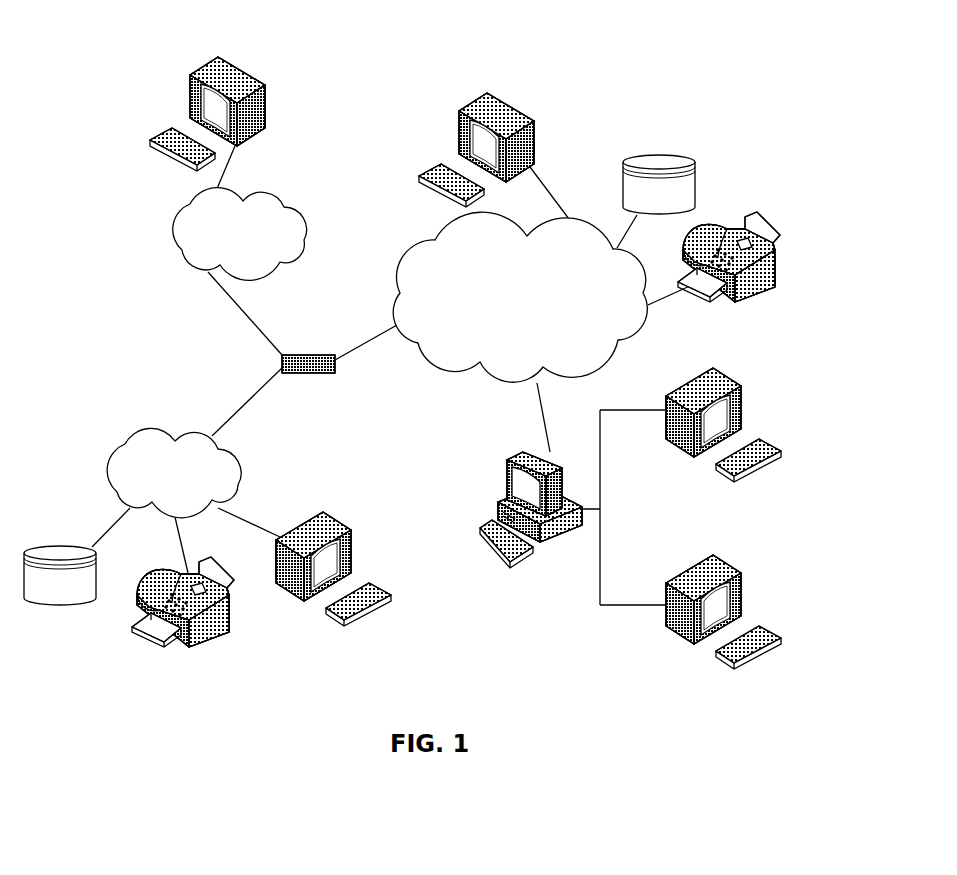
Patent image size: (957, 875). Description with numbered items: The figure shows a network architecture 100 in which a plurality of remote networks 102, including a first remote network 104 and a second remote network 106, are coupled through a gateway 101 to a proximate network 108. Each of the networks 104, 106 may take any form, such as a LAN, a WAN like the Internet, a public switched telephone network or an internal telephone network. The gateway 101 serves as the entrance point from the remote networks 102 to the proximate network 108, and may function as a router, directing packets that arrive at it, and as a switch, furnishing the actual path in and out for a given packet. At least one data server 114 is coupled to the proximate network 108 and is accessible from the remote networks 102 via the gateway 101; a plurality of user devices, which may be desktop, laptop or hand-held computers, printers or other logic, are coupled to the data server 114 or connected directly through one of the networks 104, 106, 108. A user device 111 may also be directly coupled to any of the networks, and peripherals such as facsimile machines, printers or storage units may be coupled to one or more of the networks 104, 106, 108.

The architecture 100 is at (124, 41).
The gateway 101 is at (292, 355).
The remote networks 102 is at (146, 292).
The first remote network 104 is at (107, 449).
The second remote network 106 is at (300, 207).
The proximate network 108 is at (613, 357).
The user device 111 is at (531, 121).
The data server 114 is at (504, 472).